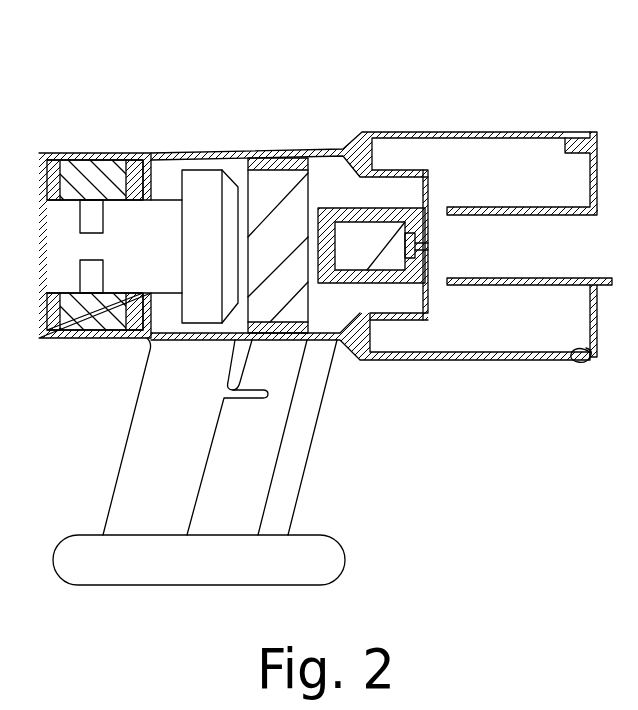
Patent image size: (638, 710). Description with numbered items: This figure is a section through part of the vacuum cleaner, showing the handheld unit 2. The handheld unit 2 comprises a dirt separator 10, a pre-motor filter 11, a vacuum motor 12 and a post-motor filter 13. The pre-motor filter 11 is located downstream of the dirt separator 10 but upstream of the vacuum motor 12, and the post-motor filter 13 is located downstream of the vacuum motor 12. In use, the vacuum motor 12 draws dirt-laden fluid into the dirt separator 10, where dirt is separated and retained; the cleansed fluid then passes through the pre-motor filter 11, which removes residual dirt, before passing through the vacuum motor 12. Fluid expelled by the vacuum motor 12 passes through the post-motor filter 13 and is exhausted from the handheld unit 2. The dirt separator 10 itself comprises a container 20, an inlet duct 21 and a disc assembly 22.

The handheld unit 2 is at (549, 78).
The dirt separator 10 is at (458, 126).
The pre-motor filter 11 is at (275, 158).
The vacuum motor 12 is at (203, 170).
The post-motor filter 13 is at (91, 153).
The container 20 is at (530, 360).
The inlet duct 21 is at (460, 286).
The disc assembly 22 is at (392, 272).